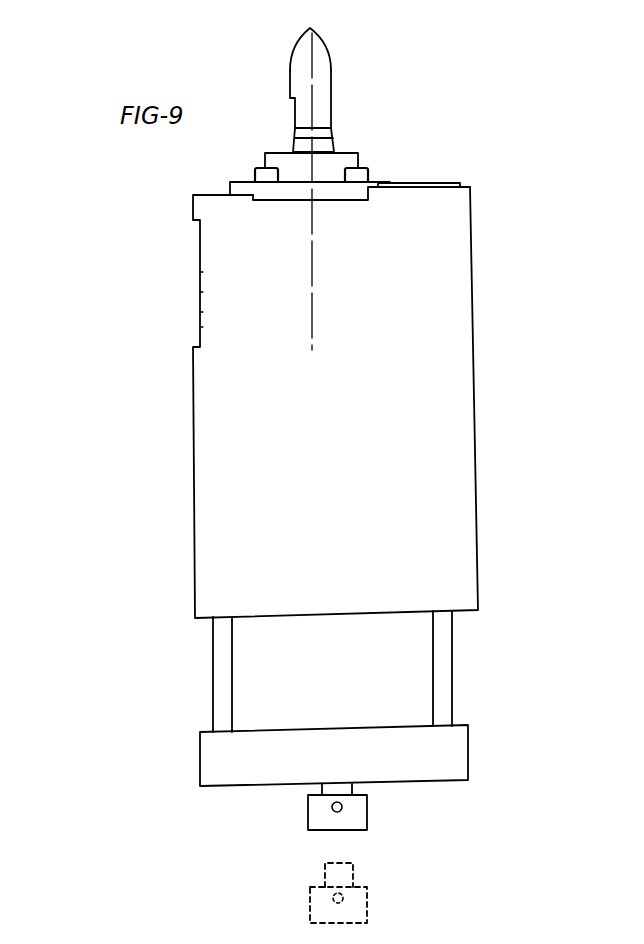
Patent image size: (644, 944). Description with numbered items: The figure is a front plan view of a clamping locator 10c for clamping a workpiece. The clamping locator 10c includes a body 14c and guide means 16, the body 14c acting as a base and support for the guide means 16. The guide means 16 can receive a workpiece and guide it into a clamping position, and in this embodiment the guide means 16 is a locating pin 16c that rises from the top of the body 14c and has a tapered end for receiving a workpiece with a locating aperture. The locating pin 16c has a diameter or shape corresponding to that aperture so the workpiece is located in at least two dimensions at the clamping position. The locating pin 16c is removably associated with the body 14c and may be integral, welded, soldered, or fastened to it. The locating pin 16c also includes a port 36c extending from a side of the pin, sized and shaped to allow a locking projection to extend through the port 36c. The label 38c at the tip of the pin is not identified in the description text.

The clamping locator 10c is at (114, 243).
The body 14c is at (150, 420).
The guide means 16 is at (368, 56).
The locating pin 16c is at (330, 88).
The port 36c is at (295, 115).
The tip point 38c is at (304, 42).